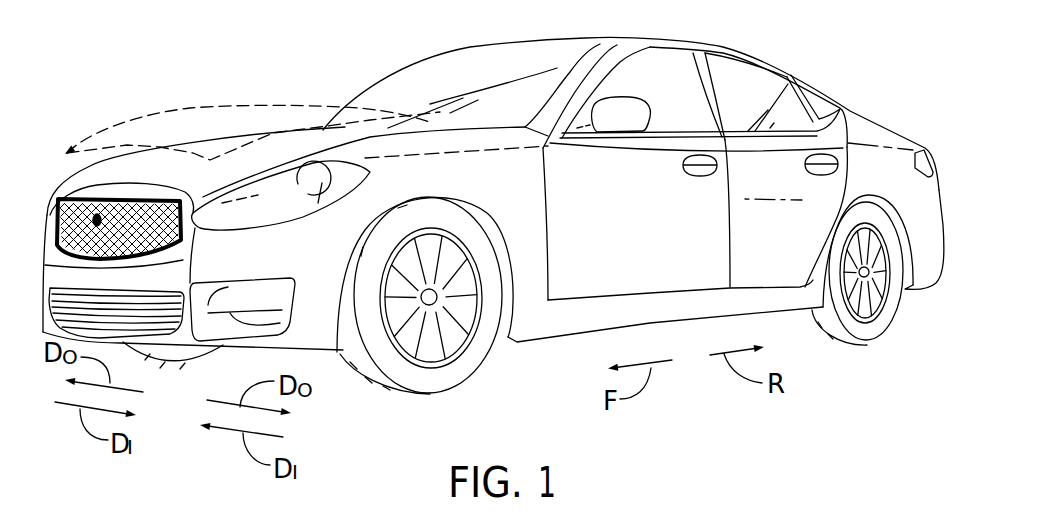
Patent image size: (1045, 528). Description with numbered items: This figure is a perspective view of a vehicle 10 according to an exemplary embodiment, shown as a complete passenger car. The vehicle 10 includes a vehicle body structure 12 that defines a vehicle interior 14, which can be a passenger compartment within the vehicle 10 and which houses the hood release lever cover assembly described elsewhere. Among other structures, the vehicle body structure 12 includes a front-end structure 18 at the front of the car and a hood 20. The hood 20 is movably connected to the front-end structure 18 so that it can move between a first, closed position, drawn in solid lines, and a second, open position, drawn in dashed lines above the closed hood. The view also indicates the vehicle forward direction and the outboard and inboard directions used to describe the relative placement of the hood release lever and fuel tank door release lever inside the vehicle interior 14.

The vehicle 10 is at (810, 25).
The vehicle body structure 12 is at (578, 35).
The vehicle interior 14 is at (659, 78).
The front-end structure 18 is at (42, 208).
The hood 20 is at (268, 148).